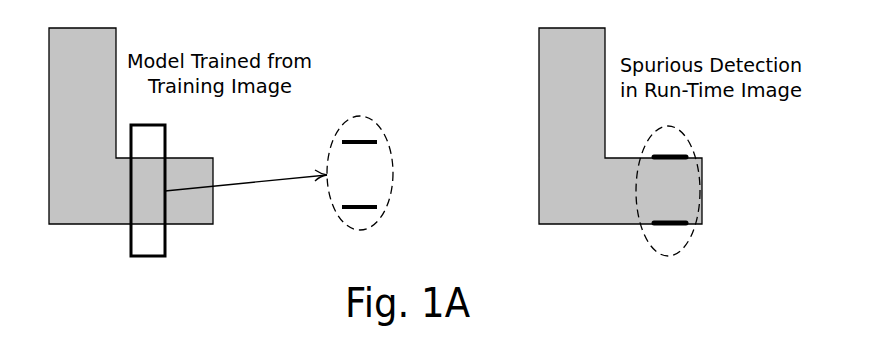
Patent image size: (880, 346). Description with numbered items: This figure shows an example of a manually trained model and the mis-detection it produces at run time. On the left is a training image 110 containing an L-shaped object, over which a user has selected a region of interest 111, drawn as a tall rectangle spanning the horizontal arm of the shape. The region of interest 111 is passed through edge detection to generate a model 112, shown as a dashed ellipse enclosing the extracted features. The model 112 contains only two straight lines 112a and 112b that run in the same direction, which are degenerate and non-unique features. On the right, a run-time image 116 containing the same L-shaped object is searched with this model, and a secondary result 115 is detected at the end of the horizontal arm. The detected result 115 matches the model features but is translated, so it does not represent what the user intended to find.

The training image 110 is at (63, 225).
The user-selected region of interest 111 is at (140, 257).
The model 112 is at (370, 180).
The straight line 112a is at (358, 141).
The straight line 112b is at (368, 210).
The secondary result 115 is at (662, 253).
The run-time image 116 is at (553, 225).